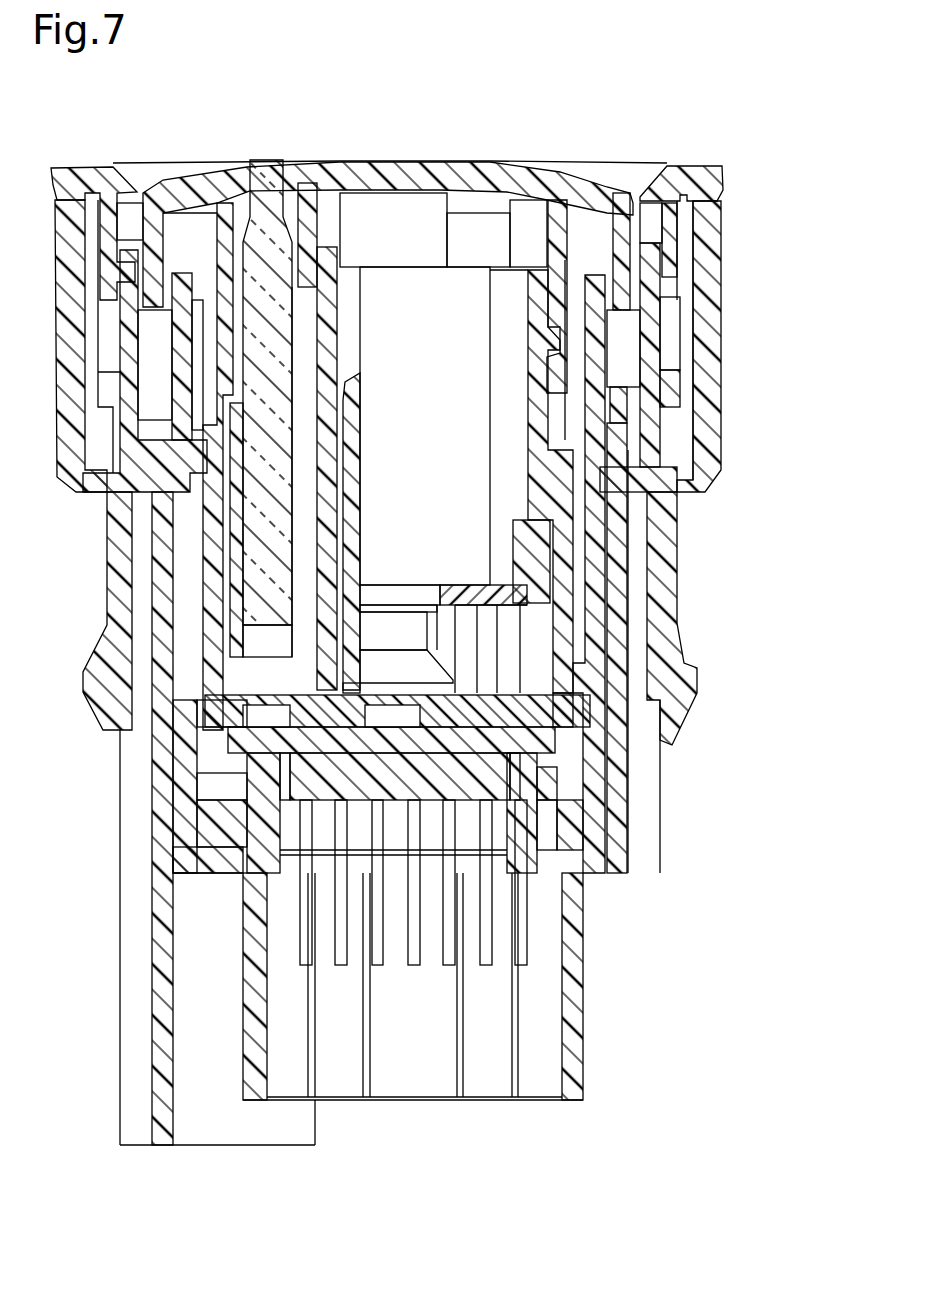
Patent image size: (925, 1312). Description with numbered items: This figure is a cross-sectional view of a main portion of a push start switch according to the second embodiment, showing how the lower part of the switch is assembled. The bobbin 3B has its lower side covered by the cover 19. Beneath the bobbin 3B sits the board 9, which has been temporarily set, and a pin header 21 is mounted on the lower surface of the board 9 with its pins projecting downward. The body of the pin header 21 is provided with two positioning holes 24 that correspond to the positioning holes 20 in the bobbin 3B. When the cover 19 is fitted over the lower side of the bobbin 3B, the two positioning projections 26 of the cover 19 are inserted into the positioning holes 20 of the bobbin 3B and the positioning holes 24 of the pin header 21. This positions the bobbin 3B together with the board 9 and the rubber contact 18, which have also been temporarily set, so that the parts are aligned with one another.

The rubber contact 18 is at (565, 700).
The bobbin 3B is at (598, 770).
The pin header 21 is at (400, 776).
The positioning projections 26 is at (290, 770).
The board 9 is at (520, 740).
The positioning holes 20 is at (240, 836).
The positioning holes 24 is at (240, 790).
The cover 19 is at (578, 948).